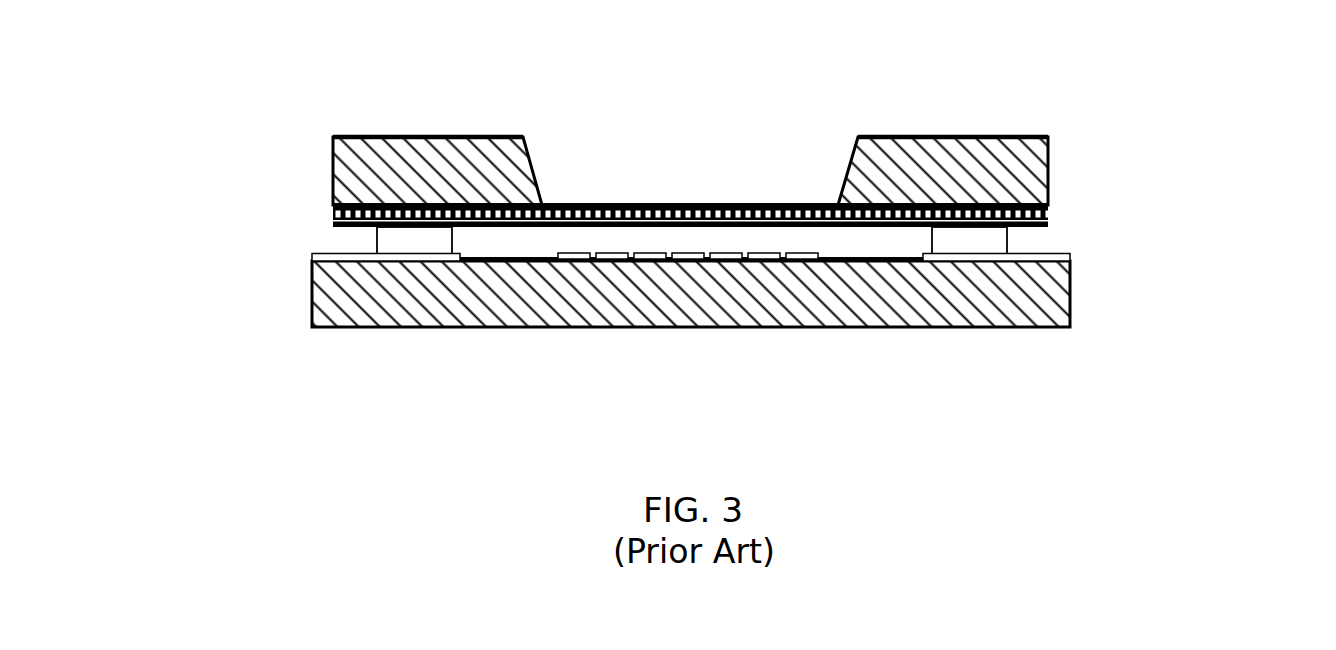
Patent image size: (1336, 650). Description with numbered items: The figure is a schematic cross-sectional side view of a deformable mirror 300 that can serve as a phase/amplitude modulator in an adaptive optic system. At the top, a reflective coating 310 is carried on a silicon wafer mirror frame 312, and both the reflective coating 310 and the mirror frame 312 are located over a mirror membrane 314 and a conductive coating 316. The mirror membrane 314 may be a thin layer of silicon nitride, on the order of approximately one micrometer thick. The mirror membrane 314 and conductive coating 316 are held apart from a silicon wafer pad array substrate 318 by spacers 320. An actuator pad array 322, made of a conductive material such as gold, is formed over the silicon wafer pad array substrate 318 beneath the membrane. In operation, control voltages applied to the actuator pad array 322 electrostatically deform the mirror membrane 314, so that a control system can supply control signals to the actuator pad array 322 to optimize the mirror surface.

The deformable mirror 300 is at (463, 31).
The reflective coating 310 is at (687, 203).
The silicon wafer mirror frame 312 is at (406, 151).
The mirror membrane 314 is at (1071, 222).
The conductive coating 316 is at (865, 240).
The silicon wafer pad array substrate 318 is at (502, 341).
The spacers 320 is at (372, 243).
The actuator pad array 322 is at (804, 284).